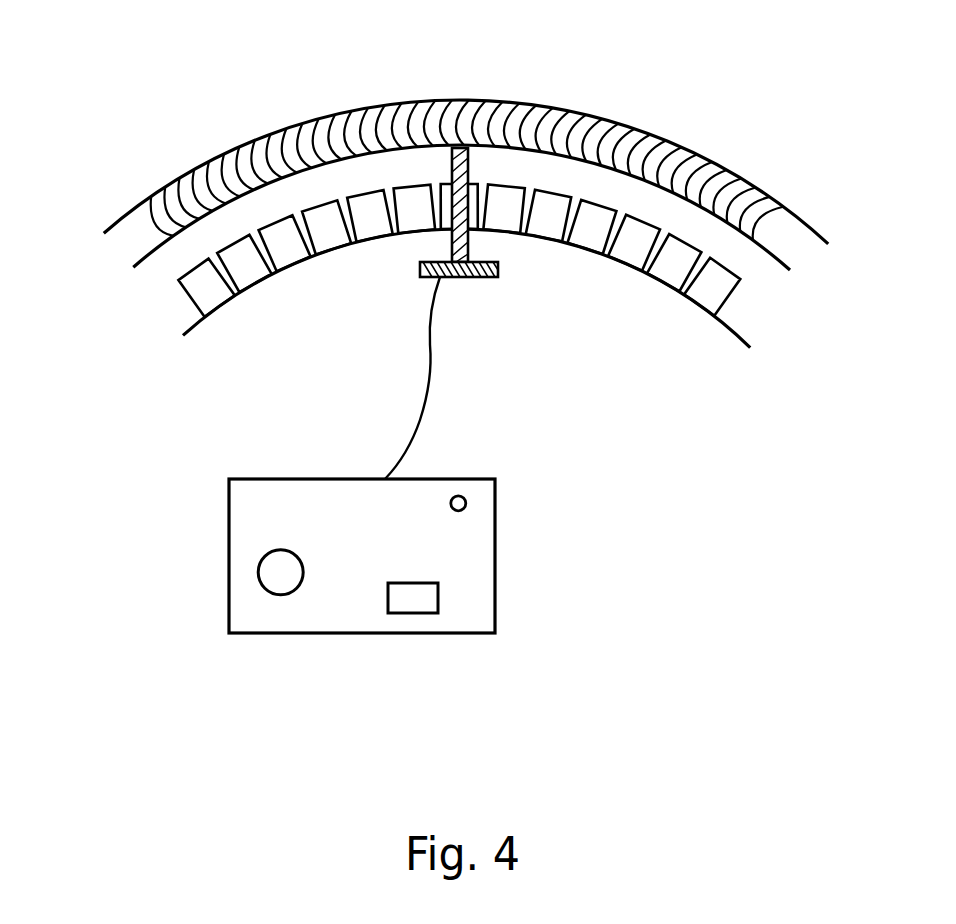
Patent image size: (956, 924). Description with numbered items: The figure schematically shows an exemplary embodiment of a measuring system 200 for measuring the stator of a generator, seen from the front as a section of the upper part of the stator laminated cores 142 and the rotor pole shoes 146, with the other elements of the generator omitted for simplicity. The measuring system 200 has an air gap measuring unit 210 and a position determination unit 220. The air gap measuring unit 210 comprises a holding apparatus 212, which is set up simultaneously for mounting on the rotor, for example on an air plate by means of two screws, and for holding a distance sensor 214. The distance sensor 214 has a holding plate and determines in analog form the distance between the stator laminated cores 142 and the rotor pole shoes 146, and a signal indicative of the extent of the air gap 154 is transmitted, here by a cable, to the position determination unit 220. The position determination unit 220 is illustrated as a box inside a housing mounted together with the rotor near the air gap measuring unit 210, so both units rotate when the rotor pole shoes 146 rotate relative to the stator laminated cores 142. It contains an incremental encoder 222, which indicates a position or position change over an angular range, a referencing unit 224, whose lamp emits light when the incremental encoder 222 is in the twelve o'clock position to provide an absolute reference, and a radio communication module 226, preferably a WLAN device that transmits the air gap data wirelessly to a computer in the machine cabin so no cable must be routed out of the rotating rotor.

The stator laminated cores 142 is at (165, 197).
The air gap 154 is at (663, 218).
The rotor pole shoes 146 is at (203, 298).
The distance sensor 214 is at (457, 148).
The holding apparatus 212 is at (470, 278).
The air gap measuring unit 210 is at (515, 270).
The position determination unit 220 is at (495, 592).
The incremental encoder 222 is at (275, 577).
The referencing unit 224 is at (466, 502).
The radio communication module 226 is at (410, 602).
The measuring system 200 is at (635, 443).